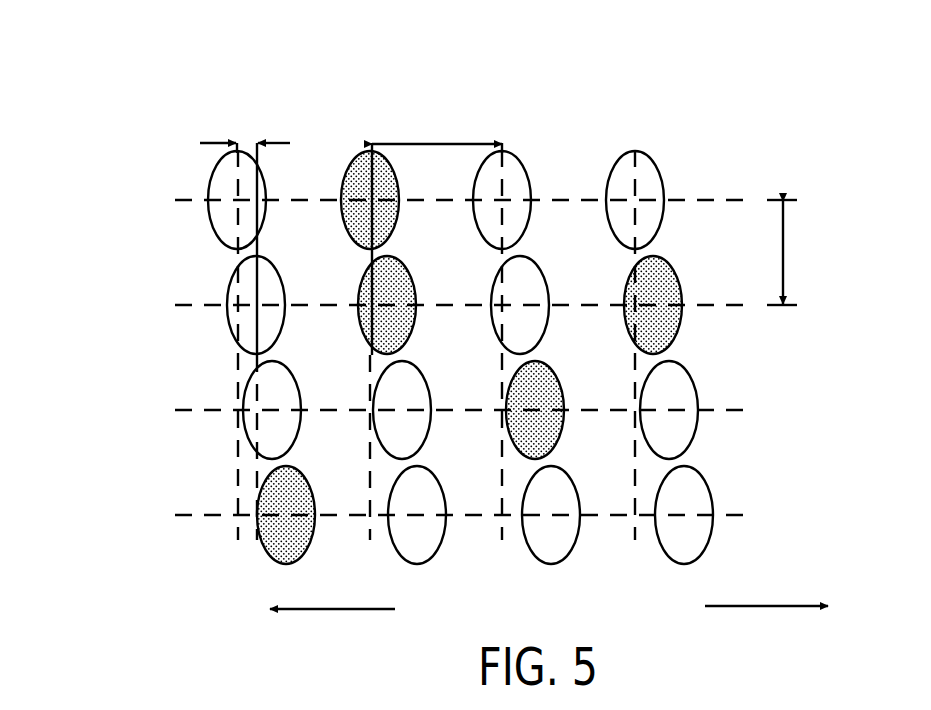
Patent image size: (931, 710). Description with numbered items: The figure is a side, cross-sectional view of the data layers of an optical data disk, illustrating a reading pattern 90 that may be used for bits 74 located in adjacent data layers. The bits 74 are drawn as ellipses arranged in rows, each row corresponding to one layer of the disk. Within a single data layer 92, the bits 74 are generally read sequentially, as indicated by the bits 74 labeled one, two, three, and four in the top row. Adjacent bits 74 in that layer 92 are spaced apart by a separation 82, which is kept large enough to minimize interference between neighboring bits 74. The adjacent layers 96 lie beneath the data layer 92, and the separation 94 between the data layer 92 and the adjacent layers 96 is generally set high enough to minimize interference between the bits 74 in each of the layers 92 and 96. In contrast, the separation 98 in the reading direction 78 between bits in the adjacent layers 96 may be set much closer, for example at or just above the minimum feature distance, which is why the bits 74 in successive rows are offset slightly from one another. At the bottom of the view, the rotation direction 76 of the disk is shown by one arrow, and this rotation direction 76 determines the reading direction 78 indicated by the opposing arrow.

The reading pattern 90 is at (125, 100).
The data layer 92 is at (163, 201).
The adjacent layers 96 is at (163, 307).
The bits 74 is at (660, 172).
The separation 82 is at (436, 142).
The separation 94 is at (783, 253).
The separation 98 is at (245, 143).
The rotation direction 76 is at (337, 609).
The reading direction 78 is at (760, 606).